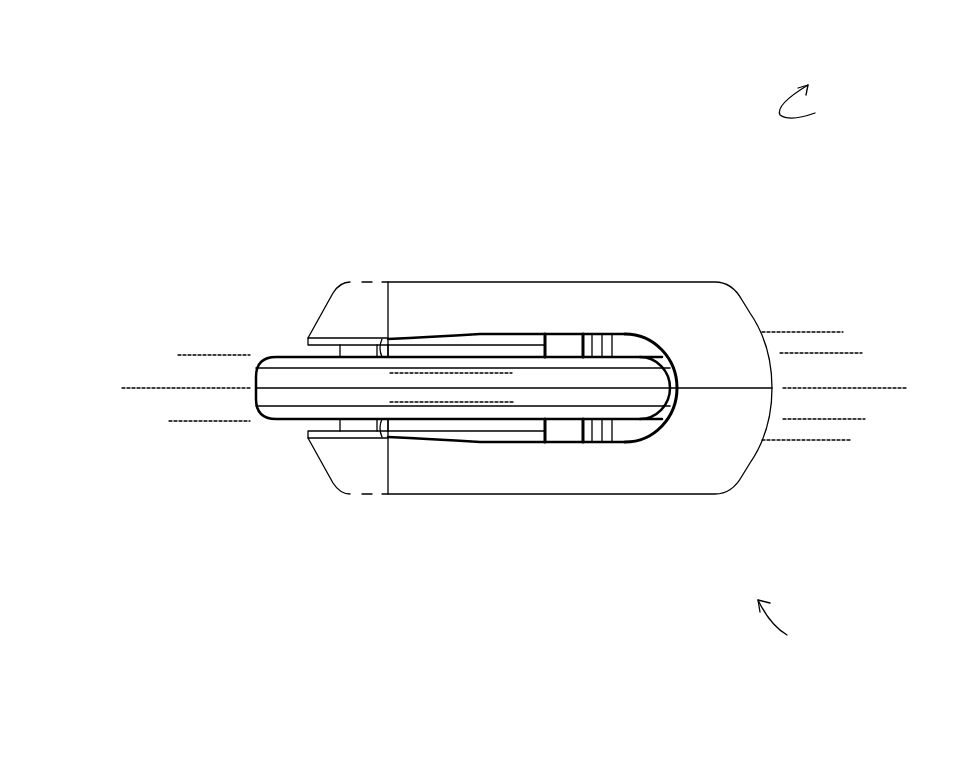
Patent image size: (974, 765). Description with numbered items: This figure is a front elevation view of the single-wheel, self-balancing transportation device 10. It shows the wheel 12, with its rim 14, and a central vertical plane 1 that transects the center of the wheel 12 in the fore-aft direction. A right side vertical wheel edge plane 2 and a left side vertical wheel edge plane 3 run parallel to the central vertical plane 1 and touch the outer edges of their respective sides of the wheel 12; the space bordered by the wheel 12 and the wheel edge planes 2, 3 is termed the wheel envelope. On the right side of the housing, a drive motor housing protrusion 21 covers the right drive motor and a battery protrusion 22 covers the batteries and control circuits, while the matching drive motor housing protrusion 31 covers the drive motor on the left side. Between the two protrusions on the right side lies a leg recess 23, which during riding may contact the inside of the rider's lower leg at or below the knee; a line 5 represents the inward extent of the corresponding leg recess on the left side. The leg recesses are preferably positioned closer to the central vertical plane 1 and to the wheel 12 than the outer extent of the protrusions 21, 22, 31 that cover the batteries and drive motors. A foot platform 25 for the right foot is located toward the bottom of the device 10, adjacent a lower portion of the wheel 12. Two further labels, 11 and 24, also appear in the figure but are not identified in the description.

The central vertical plane 1 is at (887, 390).
The right side vertical wheel edge plane 2 is at (853, 347).
The left side vertical wheel edge plane 3 is at (820, 240).
The line 5 is at (820, 328).
The single-wheel, self-balancing transportation device 10 is at (790, 634).
The proximal direction 11 is at (816, 91).
The wheel 12 is at (265, 420).
The rim 14 is at (482, 368).
The drive motor housing protrusion 21 is at (665, 300).
The battery protrusion 22 is at (480, 295).
The leg recess 23 is at (390, 462).
The connecting portion 24 is at (477, 442).
The foot platform 25 is at (391, 300).
The drive motor housing protrusion 31 is at (650, 495).